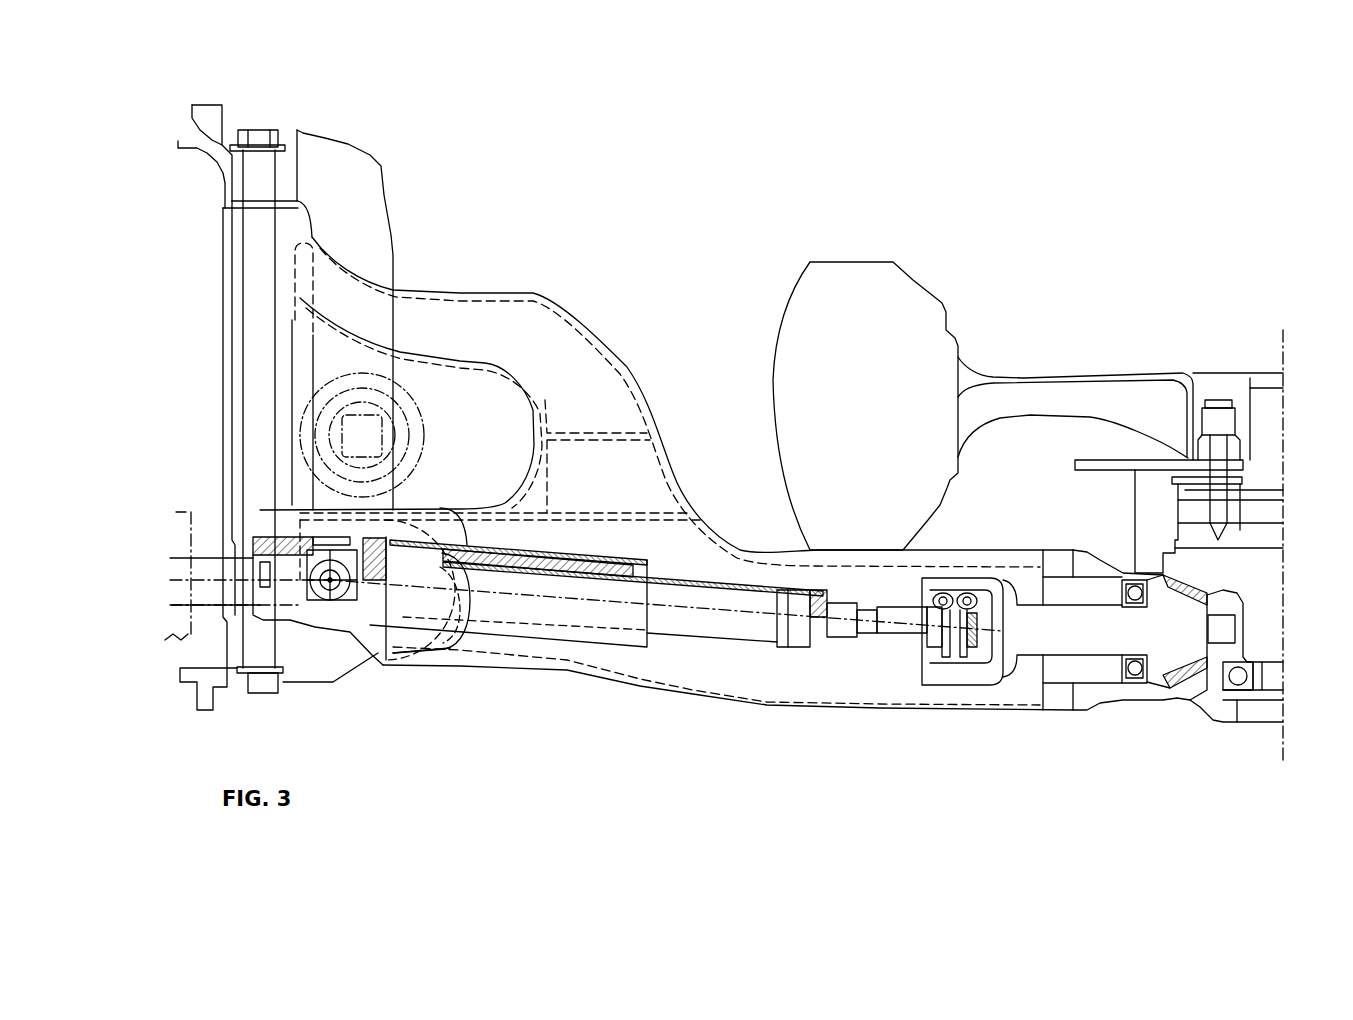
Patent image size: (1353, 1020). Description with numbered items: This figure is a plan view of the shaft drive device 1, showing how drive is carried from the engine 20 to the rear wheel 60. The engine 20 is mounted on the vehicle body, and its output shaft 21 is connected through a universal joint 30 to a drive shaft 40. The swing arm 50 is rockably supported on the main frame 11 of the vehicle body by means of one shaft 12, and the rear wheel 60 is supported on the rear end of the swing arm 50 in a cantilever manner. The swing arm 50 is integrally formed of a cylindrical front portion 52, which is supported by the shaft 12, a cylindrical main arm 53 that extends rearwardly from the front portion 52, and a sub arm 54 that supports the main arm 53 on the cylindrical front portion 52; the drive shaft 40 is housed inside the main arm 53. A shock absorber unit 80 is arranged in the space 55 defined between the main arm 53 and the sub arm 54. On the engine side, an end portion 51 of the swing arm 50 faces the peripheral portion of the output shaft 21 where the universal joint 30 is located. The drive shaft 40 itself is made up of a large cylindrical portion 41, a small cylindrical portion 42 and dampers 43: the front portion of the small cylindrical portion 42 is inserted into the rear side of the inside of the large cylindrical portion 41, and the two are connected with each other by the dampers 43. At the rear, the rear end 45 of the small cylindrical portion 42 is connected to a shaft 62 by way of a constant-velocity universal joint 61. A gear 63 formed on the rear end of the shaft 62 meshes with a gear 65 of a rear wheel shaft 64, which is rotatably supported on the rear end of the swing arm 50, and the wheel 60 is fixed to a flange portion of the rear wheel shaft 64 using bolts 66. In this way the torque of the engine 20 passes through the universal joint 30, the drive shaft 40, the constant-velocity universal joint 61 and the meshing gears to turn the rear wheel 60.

The shaft drive device 1 is at (723, 300).
The main frame 11 is at (337, 165).
The shaft 12 is at (250, 178).
The engine 20 is at (170, 514).
The output shaft 21 is at (185, 582).
The universal joint 30 is at (328, 632).
The drive shaft 40 is at (598, 650).
The large cylindrical portion 41 is at (497, 637).
The small cylindrical portion 42 is at (723, 640).
The dampers 43 is at (567, 557).
The rear end 45 is at (953, 633).
The swing arm 50 is at (783, 710).
The end portion 51 is at (423, 640).
The cylindrical front portion 52 is at (222, 288).
The main arm 53 is at (675, 692).
The sub arm 54 is at (460, 292).
The space 55 is at (485, 385).
The wheel 60 is at (915, 280).
The constant-velocity universal joint 61 is at (967, 590).
The shaft 62 is at (1033, 640).
The gear 63 is at (1183, 680).
The rear wheel shaft 64 is at (1273, 602).
The gear 65 is at (1185, 581).
The bolts 66 is at (1218, 400).
The shock absorber unit 80 is at (420, 423).